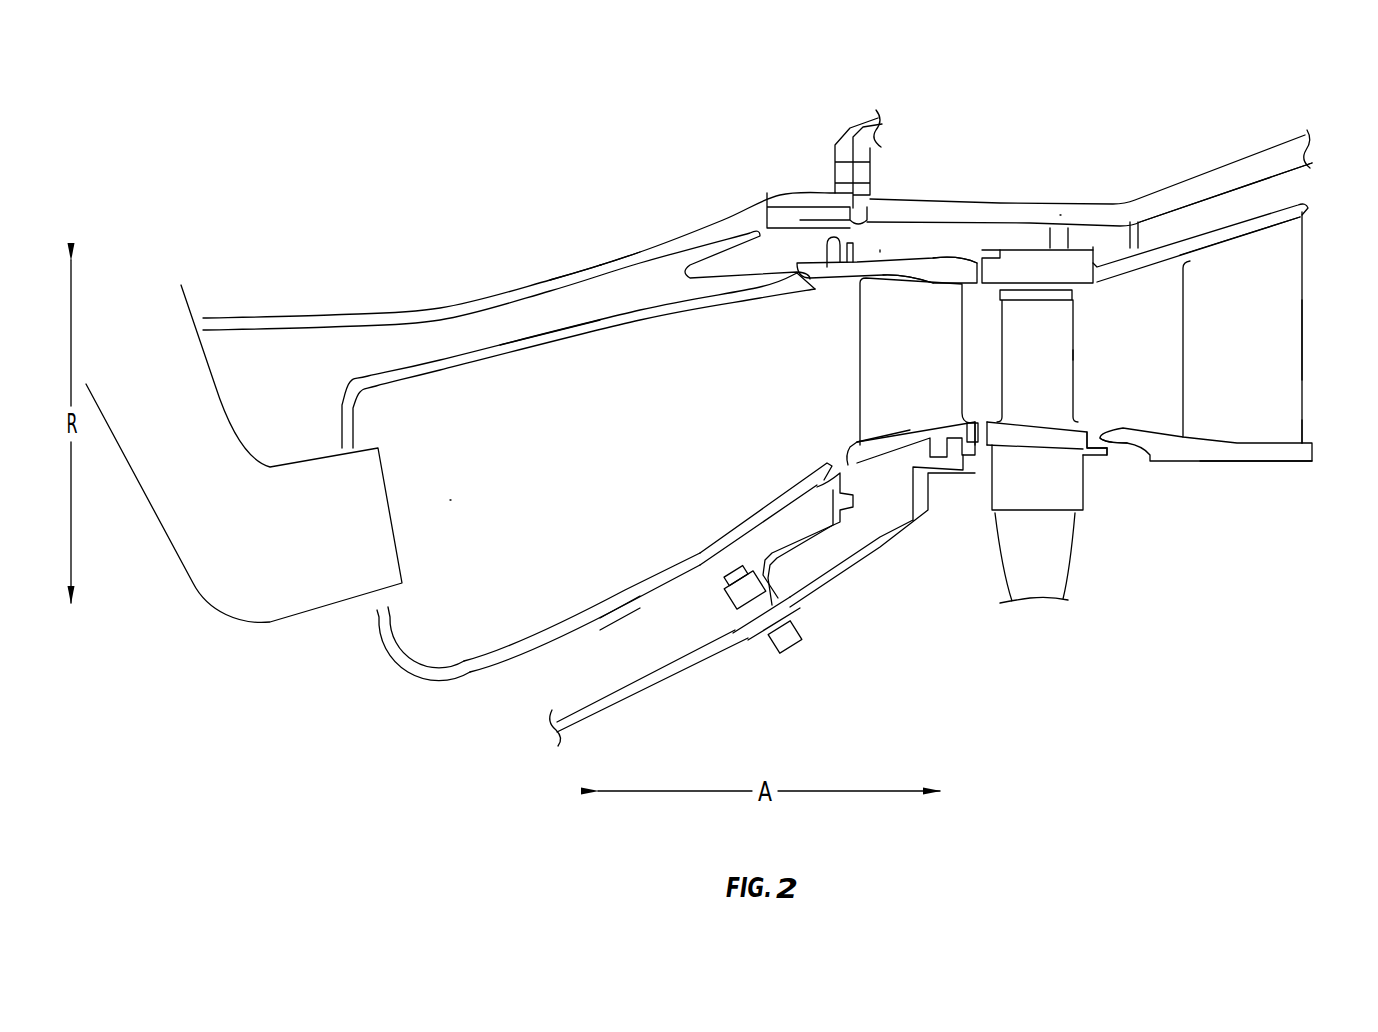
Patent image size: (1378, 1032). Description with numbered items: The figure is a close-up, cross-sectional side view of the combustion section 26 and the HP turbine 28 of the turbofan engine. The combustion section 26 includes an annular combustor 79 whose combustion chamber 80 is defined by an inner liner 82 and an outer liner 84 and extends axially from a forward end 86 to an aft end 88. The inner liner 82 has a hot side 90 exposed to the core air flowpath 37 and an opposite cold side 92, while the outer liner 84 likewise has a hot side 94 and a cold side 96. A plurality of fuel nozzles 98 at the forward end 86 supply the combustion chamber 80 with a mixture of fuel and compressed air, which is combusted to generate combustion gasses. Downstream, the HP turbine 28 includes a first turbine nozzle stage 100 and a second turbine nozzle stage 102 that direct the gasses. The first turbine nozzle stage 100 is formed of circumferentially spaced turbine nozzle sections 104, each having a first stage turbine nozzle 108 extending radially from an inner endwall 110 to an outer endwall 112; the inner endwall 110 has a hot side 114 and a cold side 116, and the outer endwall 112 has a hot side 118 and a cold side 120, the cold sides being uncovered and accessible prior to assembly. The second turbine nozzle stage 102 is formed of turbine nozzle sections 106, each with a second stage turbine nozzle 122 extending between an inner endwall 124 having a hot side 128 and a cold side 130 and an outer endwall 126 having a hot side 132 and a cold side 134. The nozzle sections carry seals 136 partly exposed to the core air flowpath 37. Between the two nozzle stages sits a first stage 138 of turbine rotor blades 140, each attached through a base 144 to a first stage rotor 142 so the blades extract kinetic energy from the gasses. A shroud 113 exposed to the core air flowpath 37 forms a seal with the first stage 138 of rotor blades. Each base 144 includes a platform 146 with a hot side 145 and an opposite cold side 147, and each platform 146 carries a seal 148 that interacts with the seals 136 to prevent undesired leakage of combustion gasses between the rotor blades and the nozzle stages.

The combustion section 26 is at (533, 235).
The HP turbine 28 is at (1055, 190).
The core air flowpath 37 is at (1120, 333).
The combustor 79 is at (420, 340).
The combustion chamber 80 is at (497, 487).
The inner liner 82 is at (547, 630).
The outer liner 84 is at (467, 367).
The forward end 86 is at (352, 658).
The aft end 88 is at (780, 345).
The hot side 90 is at (617, 583).
The cold side 92 is at (612, 618).
The hot side 94 is at (577, 345).
The cold side 96 is at (620, 317).
The fuel nozzles 98 is at (275, 500).
The first turbine nozzle stage 100 is at (380, 195).
The second turbine nozzle stage 102 is at (1262, 160).
The turbine nozzle sections 104 is at (840, 330).
The turbine nozzle sections 106 is at (1330, 325).
The first stage turbine nozzle 108 is at (883, 392).
The inner endwall 110 is at (885, 445).
The outer endwall 112 is at (885, 267).
The shroud 113 is at (1022, 272).
The hot side 114 is at (910, 423).
The cold side 116 is at (890, 463).
The hot side 118 is at (903, 287).
The cold side 120 is at (930, 267).
The second stage turbine nozzle 122 is at (1275, 238).
The inner endwall 124 is at (1228, 452).
The outer endwall 126 is at (1187, 240).
The hot side 128 is at (1277, 437).
The cold side 130 is at (1278, 468).
The hot side 132 is at (1227, 248).
The cold side 134 is at (1223, 208).
The seals 136 is at (1130, 420).
The first stage of turbine rotor blades 138 is at (1040, 320).
The turbine rotor blades 140 is at (1080, 310).
The first stage rotor 142 is at (1047, 563).
The base 144 is at (1113, 480).
The hot side 145 is at (1080, 345).
The platform 146 is at (1080, 387).
The cold side 147 is at (1013, 448).
The seal 148 is at (1118, 453).